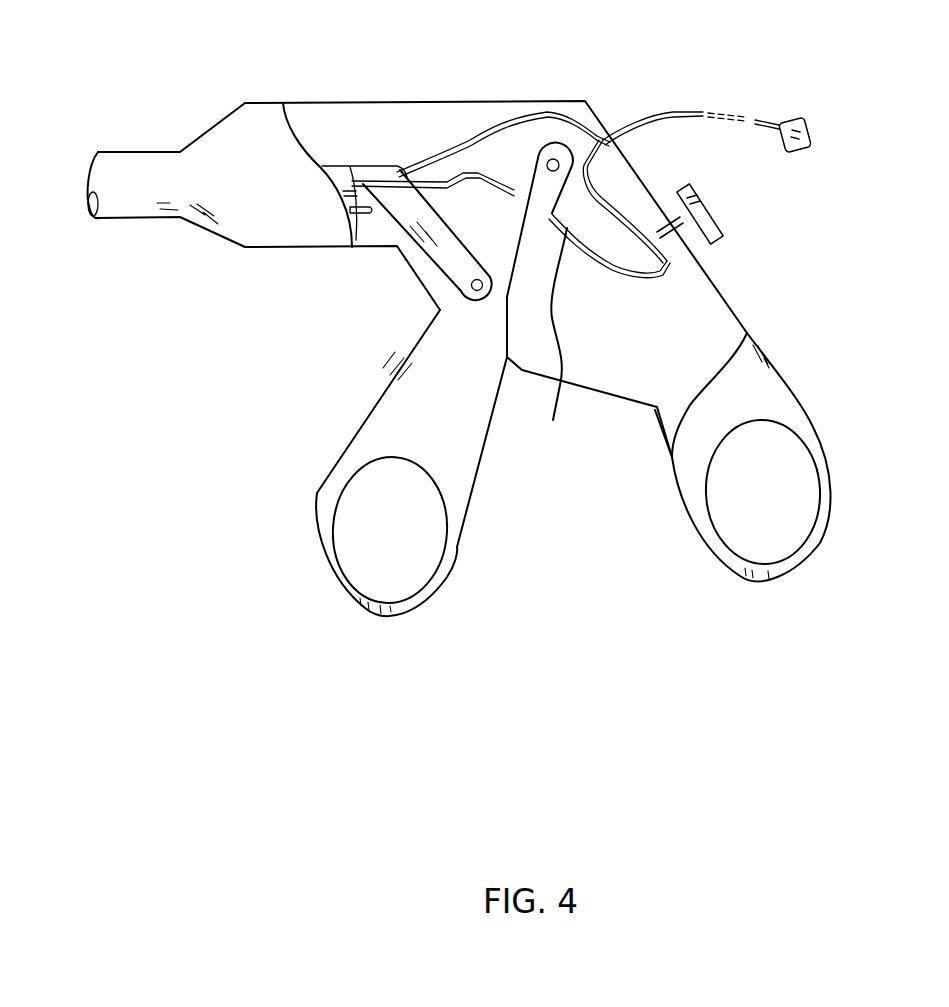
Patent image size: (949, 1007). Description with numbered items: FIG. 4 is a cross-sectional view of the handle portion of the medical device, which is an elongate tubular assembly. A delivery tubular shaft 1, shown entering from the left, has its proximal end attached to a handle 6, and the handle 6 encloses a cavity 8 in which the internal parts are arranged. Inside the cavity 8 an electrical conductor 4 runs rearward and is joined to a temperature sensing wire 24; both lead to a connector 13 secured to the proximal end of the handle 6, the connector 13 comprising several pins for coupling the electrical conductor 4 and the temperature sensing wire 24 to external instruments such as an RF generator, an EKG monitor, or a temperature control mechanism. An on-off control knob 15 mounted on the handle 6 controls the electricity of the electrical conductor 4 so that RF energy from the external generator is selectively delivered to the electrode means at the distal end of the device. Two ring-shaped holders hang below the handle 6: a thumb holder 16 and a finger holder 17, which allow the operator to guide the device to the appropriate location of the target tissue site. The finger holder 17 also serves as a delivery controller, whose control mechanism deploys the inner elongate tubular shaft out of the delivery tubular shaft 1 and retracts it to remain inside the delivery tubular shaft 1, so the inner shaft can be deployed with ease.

The delivery tubular shaft 1 is at (138, 152).
The electrical conductor 4 is at (577, 387).
The handle 6 is at (588, 108).
The cavity 8 is at (432, 282).
The connector 13 is at (793, 110).
The on-off control knob 15 is at (723, 225).
The thumb holder 16 is at (798, 525).
The finger holder 17 is at (425, 565).
The temperature sensing wire 24 is at (475, 123).